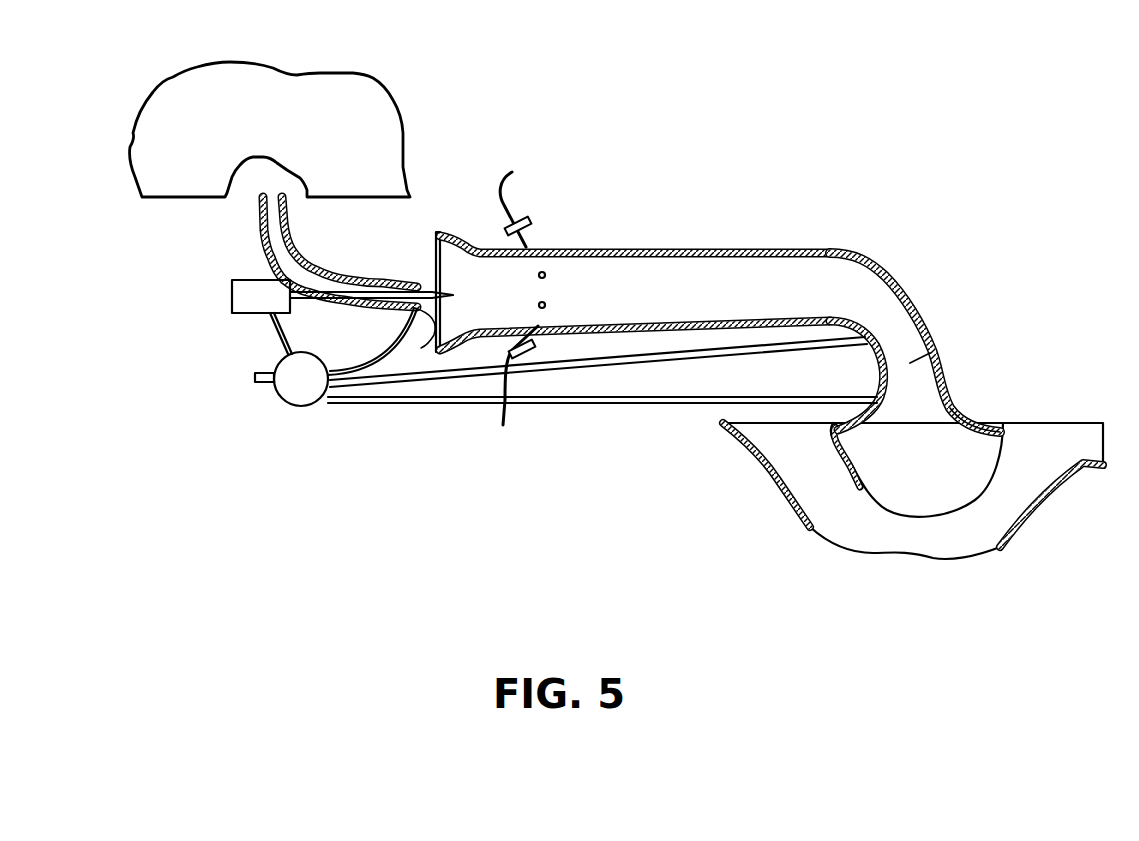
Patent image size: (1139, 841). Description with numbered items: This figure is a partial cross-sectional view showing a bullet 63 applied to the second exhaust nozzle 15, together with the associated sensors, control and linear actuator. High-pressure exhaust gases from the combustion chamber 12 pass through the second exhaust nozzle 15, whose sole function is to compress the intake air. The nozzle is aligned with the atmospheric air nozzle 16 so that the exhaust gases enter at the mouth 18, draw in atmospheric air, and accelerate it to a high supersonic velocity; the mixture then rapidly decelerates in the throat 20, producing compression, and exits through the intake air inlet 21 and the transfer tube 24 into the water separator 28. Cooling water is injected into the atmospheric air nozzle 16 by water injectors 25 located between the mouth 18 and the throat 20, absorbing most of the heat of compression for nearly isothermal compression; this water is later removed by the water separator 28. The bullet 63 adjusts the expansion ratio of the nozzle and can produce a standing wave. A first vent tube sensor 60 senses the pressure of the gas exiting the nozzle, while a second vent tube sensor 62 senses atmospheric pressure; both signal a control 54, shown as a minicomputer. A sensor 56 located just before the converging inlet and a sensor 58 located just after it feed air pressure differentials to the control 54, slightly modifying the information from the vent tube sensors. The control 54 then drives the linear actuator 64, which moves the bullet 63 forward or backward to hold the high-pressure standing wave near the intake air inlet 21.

The combustion chamber 12 is at (407, 147).
The second exhaust nozzle 15 is at (400, 277).
The atmospheric air nozzle 16 is at (705, 250).
The mouth 18 is at (440, 262).
The throat 20 is at (910, 363).
The intake air inlet 21 is at (915, 390).
The transfer tube 24 is at (985, 402).
The water injectors 25 is at (538, 237).
The water separator 28 is at (767, 467).
The control 54 is at (302, 407).
The sensor 56 is at (717, 354).
The sensor 58 is at (676, 400).
The first vent tube sensor 60 is at (361, 368).
The second vent tube sensor 62 is at (263, 383).
The bullet 63 is at (418, 344).
The linear actuator 64 is at (250, 280).